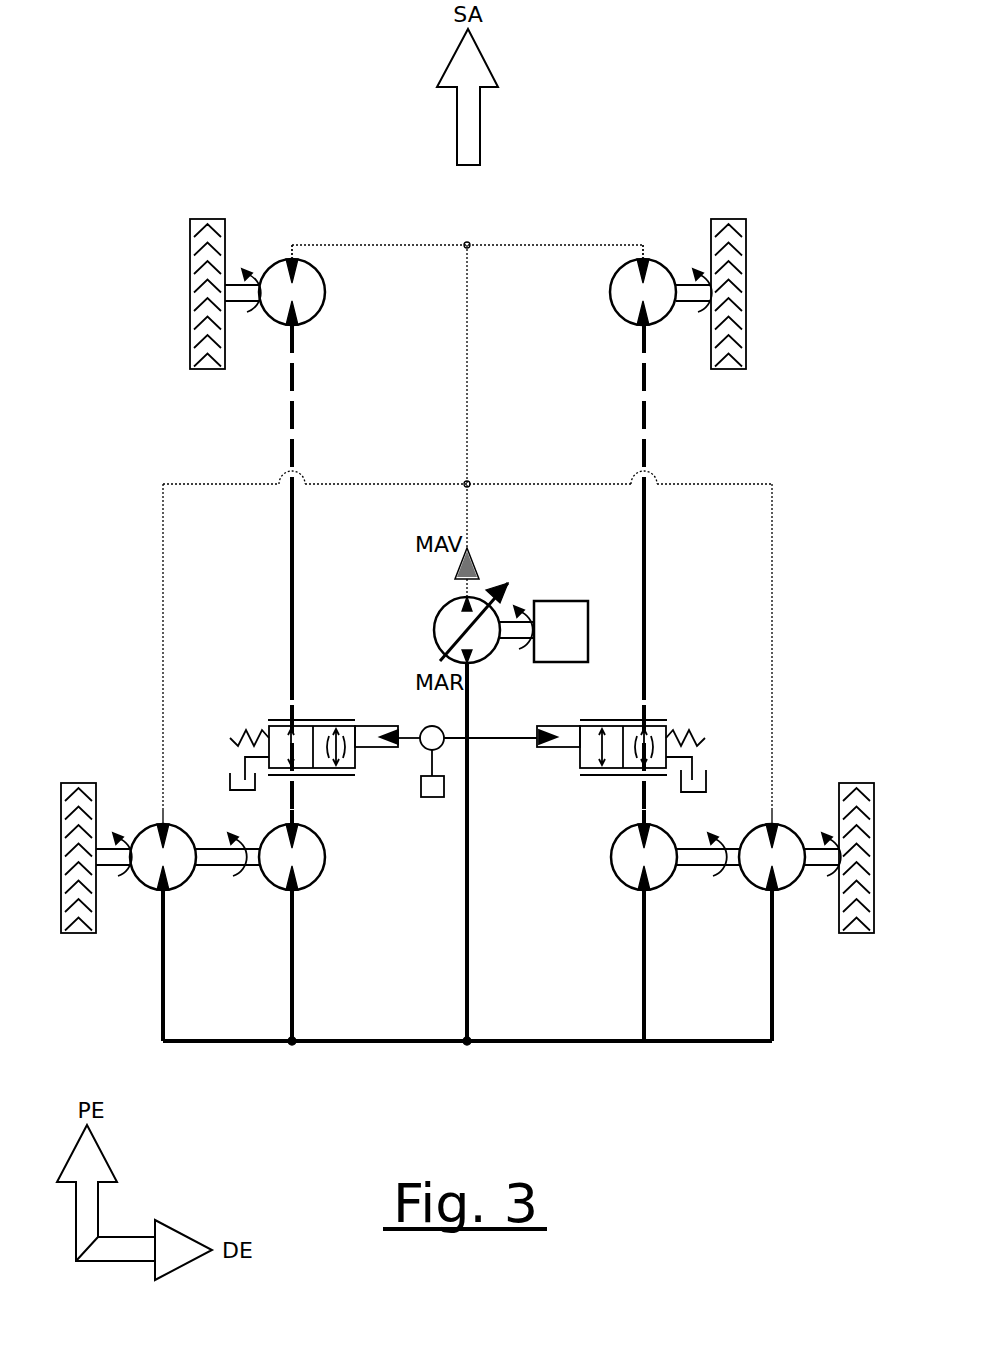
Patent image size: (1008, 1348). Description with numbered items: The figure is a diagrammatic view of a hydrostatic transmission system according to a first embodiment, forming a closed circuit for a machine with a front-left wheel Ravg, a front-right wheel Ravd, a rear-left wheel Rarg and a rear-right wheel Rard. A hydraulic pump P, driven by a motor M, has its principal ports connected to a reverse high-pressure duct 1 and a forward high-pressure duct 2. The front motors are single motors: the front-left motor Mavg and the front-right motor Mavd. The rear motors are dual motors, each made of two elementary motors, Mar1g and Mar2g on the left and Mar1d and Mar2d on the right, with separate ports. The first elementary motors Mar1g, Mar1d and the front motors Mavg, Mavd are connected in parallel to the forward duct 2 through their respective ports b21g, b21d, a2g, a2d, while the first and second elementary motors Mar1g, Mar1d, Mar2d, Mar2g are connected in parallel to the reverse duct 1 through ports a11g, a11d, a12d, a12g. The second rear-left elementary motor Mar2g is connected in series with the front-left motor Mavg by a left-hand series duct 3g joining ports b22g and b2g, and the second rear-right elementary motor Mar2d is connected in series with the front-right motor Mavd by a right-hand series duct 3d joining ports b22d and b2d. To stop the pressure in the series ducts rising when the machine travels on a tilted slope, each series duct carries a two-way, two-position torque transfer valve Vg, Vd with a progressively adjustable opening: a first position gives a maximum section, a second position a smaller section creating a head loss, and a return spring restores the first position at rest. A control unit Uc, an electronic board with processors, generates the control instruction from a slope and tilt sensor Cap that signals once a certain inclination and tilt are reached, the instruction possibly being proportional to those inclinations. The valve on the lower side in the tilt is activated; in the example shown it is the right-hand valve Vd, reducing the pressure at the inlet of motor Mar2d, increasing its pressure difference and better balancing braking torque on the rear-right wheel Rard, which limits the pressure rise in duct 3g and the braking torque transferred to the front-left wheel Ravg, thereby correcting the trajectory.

The reverse high-pressure duct 1 is at (470, 855).
The forward high-pressure duct 2 is at (468, 530).
The hydraulic pump P is at (437, 628).
The motor M is at (550, 601).
The left-hand valve Vg is at (280, 724).
The right-hand valve Vd is at (655, 724).
The control unit Uc is at (428, 727).
The slope and tilt sensor Cap is at (432, 798).
The left-hand series duct 3g is at (293, 575).
The right-hand series duct 3d is at (646, 575).
The front-left wheel Ravg is at (207, 220).
The front-right wheel Ravd is at (727, 220).
The rear-left wheel Rarg is at (80, 784).
The rear-right wheel Rard is at (857, 784).
The front-left motor Mavg is at (310, 322).
The front-right motor Mavd is at (625, 322).
The first rear-left elementary motor Mar1g is at (182, 887).
The second rear-left elementary motor Mar2g is at (311, 887).
The second rear-right elementary motor Mar2d is at (663, 887).
The first rear-right elementary motor Mar1d is at (791, 887).
The port of front-left motor a2g is at (272, 249).
The port of front-left motor b2g is at (272, 337).
The port of front-right motor a2d is at (662, 249).
The port of front-right motor b2d is at (663, 337).
The port of first rear-left elementary motor b21g is at (144, 816).
The port of first rear-left elementary motor a11g is at (144, 903).
The port of second rear-left elementary motor b22g is at (273, 816).
The port of second rear-left elementary motor a12g is at (273, 903).
The port of second rear-right elementary motor b22d is at (625, 816).
The port of second rear-right elementary motor a12d is at (625, 903).
The port of first rear-right elementary motor b21d is at (754, 816).
The port of first rear-right elementary motor a11d is at (754, 903).